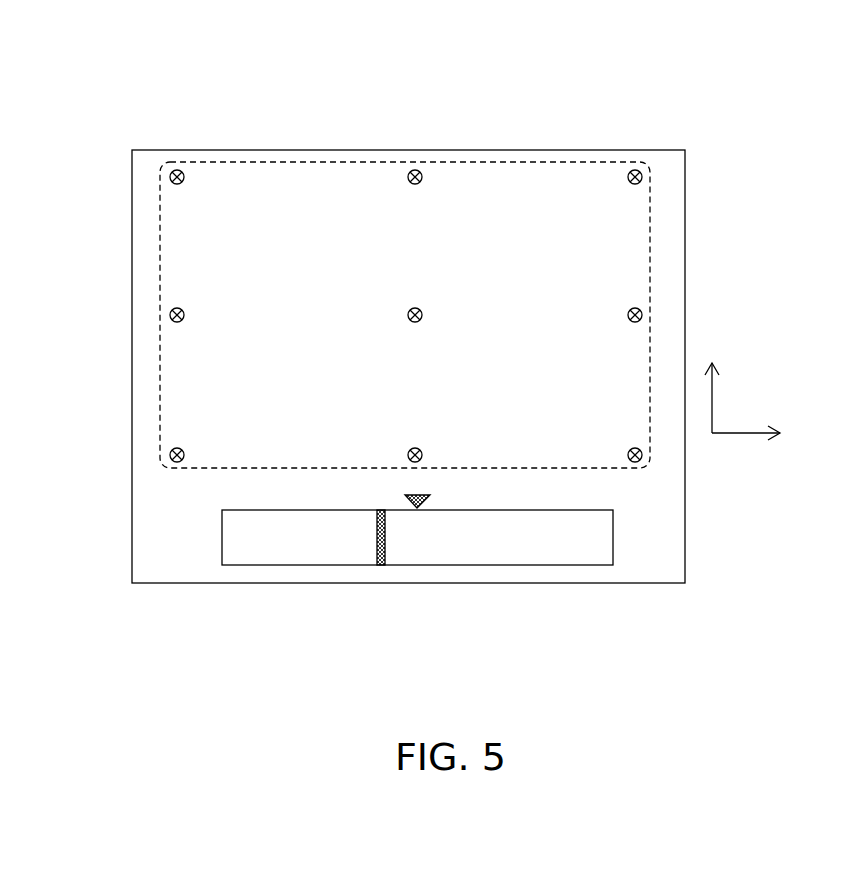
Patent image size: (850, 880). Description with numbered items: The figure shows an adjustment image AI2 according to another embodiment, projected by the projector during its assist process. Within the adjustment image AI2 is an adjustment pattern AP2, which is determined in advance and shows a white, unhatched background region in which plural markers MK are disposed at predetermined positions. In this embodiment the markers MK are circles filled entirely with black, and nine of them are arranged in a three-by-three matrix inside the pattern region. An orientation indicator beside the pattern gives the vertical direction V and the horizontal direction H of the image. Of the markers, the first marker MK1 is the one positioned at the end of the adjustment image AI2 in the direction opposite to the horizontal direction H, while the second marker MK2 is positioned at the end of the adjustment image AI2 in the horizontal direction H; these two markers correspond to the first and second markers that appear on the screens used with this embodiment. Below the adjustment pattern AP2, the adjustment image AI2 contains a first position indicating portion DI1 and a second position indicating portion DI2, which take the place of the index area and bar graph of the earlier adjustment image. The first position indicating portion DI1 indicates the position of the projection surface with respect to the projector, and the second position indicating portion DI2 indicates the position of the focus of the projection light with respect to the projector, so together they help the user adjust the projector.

The adjustment image AI2 is at (592, 150).
The adjustment pattern AP2 is at (650, 287).
The markers MK is at (183, 172).
The first marker MK1 is at (167, 315).
The second marker MK2 is at (643, 312).
The first position indicating portion DI1 is at (422, 494).
The second position indicating portion DI2 is at (373, 535).
The vertical direction V is at (710, 385).
The horizontal direction H is at (758, 435).